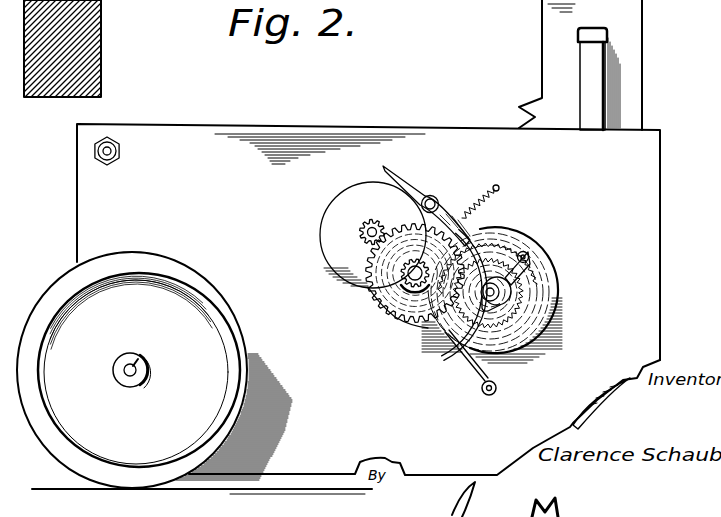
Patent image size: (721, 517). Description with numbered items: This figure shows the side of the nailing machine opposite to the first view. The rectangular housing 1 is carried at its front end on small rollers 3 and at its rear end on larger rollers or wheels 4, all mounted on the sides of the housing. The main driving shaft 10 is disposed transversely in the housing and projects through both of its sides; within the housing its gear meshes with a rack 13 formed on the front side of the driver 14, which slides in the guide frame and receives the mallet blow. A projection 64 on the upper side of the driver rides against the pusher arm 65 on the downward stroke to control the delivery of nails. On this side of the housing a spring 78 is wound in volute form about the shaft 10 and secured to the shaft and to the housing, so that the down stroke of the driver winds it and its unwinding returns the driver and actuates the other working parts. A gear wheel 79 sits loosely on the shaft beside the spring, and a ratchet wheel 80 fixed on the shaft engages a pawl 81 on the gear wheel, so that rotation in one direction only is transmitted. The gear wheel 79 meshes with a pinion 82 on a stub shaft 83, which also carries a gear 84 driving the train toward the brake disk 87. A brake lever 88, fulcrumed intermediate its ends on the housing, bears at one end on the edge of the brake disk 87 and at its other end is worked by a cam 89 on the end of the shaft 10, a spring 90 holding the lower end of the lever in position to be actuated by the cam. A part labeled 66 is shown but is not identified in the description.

The housing 1 is at (327, 132).
The small rollers 3 is at (607, 378).
The larger rollers or wheels 4 is at (168, 297).
The main driving shaft 10 is at (499, 293).
The rack 13 is at (541, 99).
The driver 14 is at (595, 65).
The projection 64 is at (590, 80).
The pusher arm 65 is at (372, 221).
The pinion pivot 66 is at (366, 236).
The spring 78 is at (482, 382).
The gear wheel 79 is at (490, 236).
The ratchet wheel 80 is at (512, 266).
The pawl 81 is at (529, 258).
The pinion 82 is at (415, 262).
The stub shaft 83 is at (417, 290).
The gear 84 is at (382, 292).
The brake disk 87 is at (336, 208).
The brake lever 88 is at (422, 194).
The cam 89 is at (462, 350).
The spring 90 is at (480, 197).